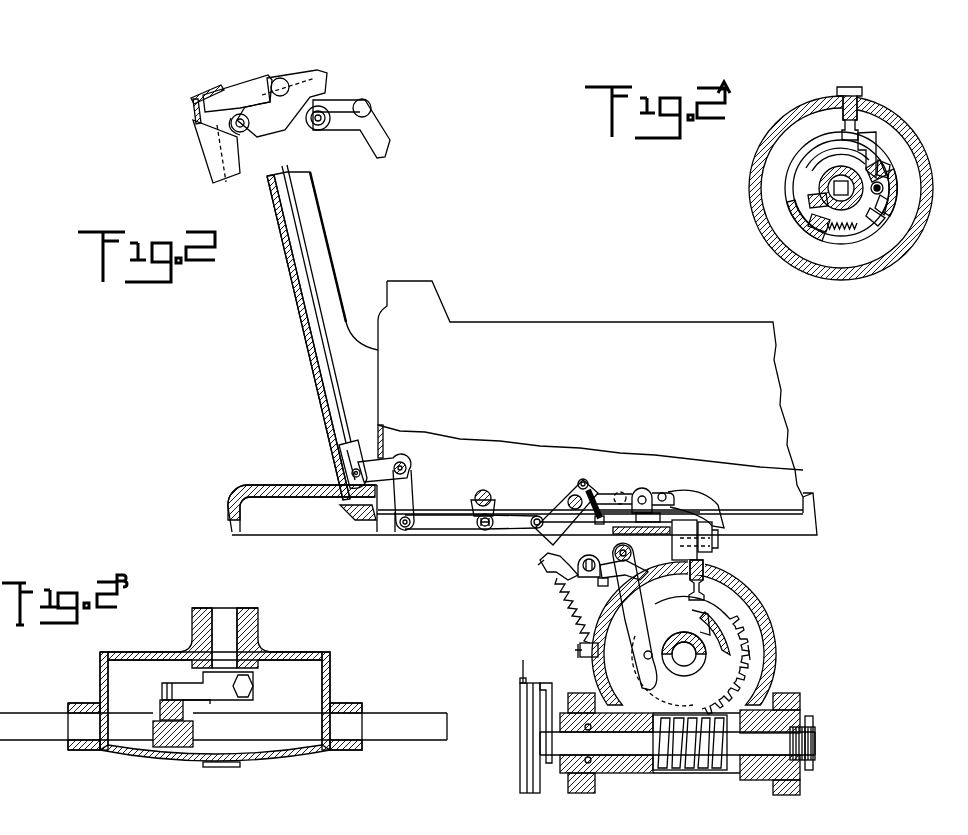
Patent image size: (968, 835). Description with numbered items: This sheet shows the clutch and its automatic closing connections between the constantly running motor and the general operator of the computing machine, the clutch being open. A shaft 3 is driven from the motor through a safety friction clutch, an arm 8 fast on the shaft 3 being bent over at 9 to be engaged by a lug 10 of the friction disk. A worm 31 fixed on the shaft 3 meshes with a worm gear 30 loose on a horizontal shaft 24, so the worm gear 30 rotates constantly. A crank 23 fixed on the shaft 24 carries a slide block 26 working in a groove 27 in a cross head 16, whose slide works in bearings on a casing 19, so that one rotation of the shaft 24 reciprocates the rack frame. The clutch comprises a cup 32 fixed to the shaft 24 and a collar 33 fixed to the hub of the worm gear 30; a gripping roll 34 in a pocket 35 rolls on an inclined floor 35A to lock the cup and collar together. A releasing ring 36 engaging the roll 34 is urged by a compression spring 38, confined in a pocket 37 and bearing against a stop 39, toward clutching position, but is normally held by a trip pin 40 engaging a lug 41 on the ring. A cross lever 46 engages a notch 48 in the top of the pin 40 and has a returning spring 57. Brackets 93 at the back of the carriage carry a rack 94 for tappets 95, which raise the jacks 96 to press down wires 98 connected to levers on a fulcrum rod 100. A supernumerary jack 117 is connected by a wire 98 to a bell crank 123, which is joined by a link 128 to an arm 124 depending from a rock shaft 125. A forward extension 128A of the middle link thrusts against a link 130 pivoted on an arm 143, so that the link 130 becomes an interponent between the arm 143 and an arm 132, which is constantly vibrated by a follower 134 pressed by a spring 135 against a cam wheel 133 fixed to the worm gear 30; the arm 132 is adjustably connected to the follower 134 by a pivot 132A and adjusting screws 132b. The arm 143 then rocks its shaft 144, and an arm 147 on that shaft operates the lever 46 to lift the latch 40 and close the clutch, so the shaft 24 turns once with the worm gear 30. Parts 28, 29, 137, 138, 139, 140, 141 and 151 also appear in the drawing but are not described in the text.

In FIG. 2, the shaft 3 is at (677, 741).
In FIG. 2, the arm 8 is at (548, 693).
In FIG. 2, the bent-over portion of arm 9 is at (520, 683).
In FIG. 2, the lug 10 is at (523, 677).
In FIG. 2B, the cross head 16 is at (193, 738).
In FIG. 2B, the casing 19 is at (292, 763).
In FIG. 2B, the crank 23 is at (195, 683).
In FIG. 2, the horizontal shaft 24 is at (684, 654).
In FIG. 2A, the horizontal shaft 24 is at (825, 188).
In FIG. 2B, the horizontal shaft 24 is at (215, 638).
In FIG. 2B, the slide block 26 is at (187, 703).
In FIG. 2B, the groove 27 is at (160, 710).
In FIG. 2, the housing 28 is at (760, 594).
In FIG. 2A, the housing 28 is at (926, 230).
In FIG. 2, the bearing 29 is at (660, 773).
In FIG. 2, the worm gear 30 is at (772, 645).
In FIG. 2A, the worm gear 30 is at (873, 155).
In FIG. 2, the worm 31 is at (702, 750).
In FIG. 2, the clutch cup 32 is at (640, 675).
In FIG. 2A, the clutch cup 32 is at (862, 237).
In FIG. 2A, the collar 33 is at (825, 165).
In FIG. 2A, the gripping roll 34 is at (883, 187).
In FIG. 2A, the pocket 35 is at (880, 195).
In FIG. 2A, the inclined floor 35A is at (877, 212).
In FIG. 2, the releasing ring 36 is at (720, 640).
In FIG. 2A, the releasing ring 36 is at (882, 167).
In FIG. 2A, the pocket 37 is at (812, 207).
In FIG. 2A, the compression spring 38 is at (855, 223).
In FIG. 2A, the stop 39 is at (812, 218).
In FIG. 2, the trip pin 40 is at (707, 577).
In FIG. 2A, the trip pin 40 is at (848, 98).
In FIG. 2, the lug 41 is at (710, 610).
In FIG. 2A, the lug 41 is at (873, 130).
In FIG. 2, the cross lever 46 is at (712, 542).
In FIG. 2, the notch 48 is at (712, 556).
In FIG. 2, the returning spring 57 is at (703, 512).
In FIG. 2, the brackets 93 is at (383, 133).
In FIG. 2, the rack 94 is at (317, 122).
In FIG. 2, the tappets 95 is at (330, 98).
In FIG. 2, the jacks 96 is at (313, 75).
In FIG. 2, the wires 98 is at (227, 163).
In FIG. 2, the fulcrum rod 100 is at (402, 467).
In FIG. 2, the supernumerary jack 117 is at (232, 100).
In FIG. 2, the bell crank 123 is at (412, 490).
In FIG. 2, the arm 124 is at (488, 516).
In FIG. 2, the rock shaft 125 is at (481, 495).
In FIG. 2, the link 128 is at (447, 530).
In FIG. 2, the forward extension 128A is at (507, 530).
In FIG. 2, the link 130 is at (557, 510).
In FIG. 2, the arm 132 is at (548, 570).
In FIG. 2, the pivot 132A is at (545, 562).
In FIG. 2, the adjusting screws 132b is at (600, 580).
In FIG. 2, the cam wheel 133 is at (645, 652).
In FIG. 2, the follower 134 is at (633, 620).
In FIG. 2, the spring 135 is at (567, 602).
In FIG. 2, the pivot 137 is at (627, 555).
In FIG. 2, the arm 138 is at (637, 573).
In FIG. 2, the bar 139 is at (625, 500).
In FIG. 2, the pin 140 is at (584, 484).
In FIG. 2, the bolt 141 is at (590, 558).
In FIG. 2, the arm 143 is at (632, 490).
In FIG. 2, the rock shaft 144 is at (652, 494).
In FIG. 2, the arm 147 is at (690, 500).
In FIG. 2, the cam 151 is at (270, 80).